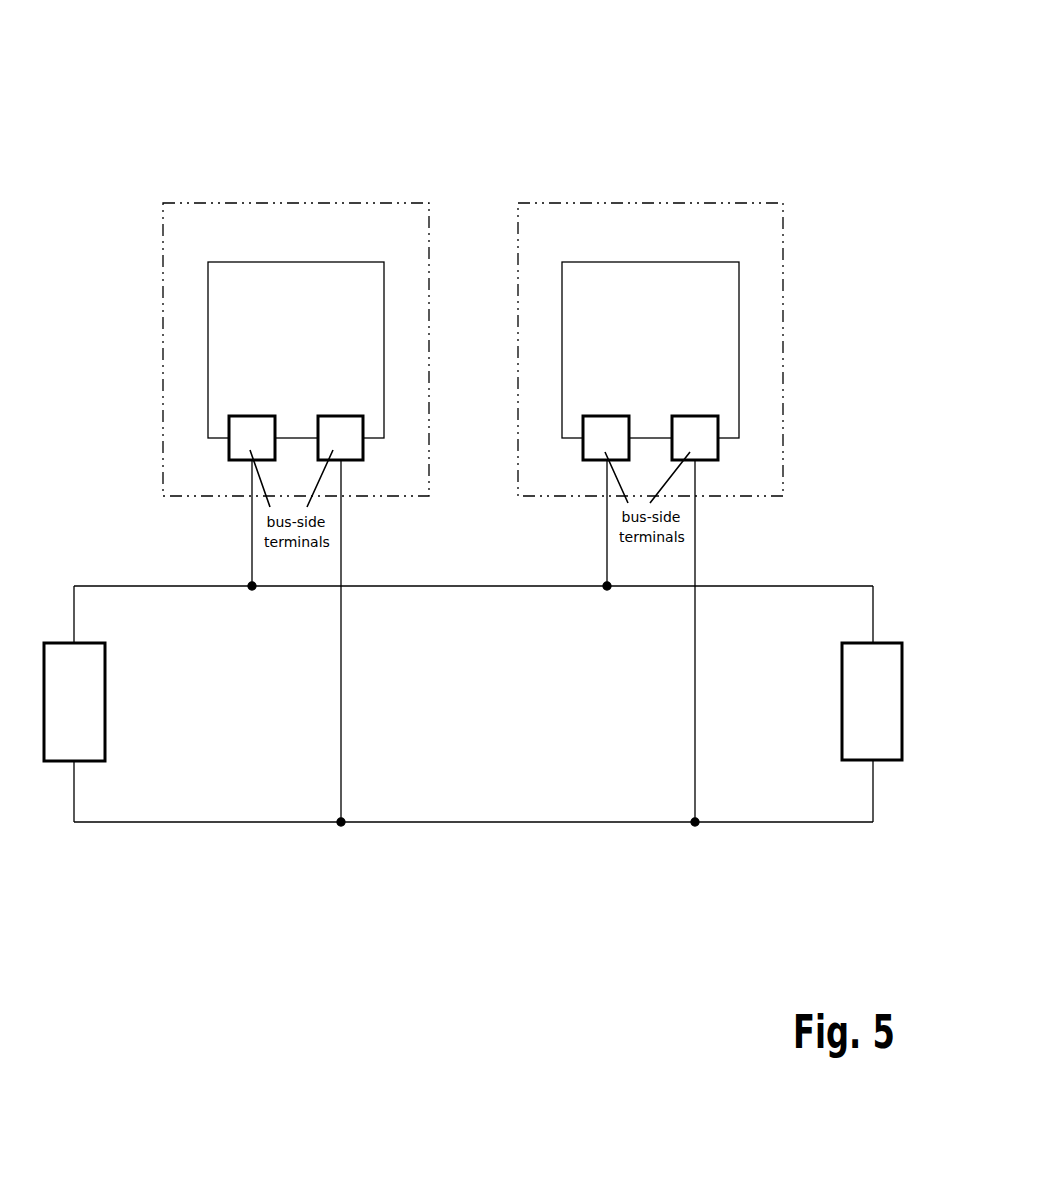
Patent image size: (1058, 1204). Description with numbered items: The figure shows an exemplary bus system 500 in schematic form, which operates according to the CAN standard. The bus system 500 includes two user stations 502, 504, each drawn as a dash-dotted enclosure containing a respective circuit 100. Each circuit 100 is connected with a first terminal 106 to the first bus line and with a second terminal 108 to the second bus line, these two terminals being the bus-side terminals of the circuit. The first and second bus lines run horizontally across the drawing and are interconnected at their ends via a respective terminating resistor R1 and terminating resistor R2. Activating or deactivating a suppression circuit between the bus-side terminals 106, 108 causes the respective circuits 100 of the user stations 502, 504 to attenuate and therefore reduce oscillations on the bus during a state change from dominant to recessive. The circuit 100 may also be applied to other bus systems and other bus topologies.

The bus system 500 is at (819, 116).
The user station 502 is at (222, 203).
The user station 504 is at (577, 203).
The circuit 100 is at (349, 262).
The first terminal 106 is at (252, 414).
The second terminal 108 is at (342, 414).
The terminating resistor R1 is at (106, 697).
The terminating resistor R2 is at (842, 690).